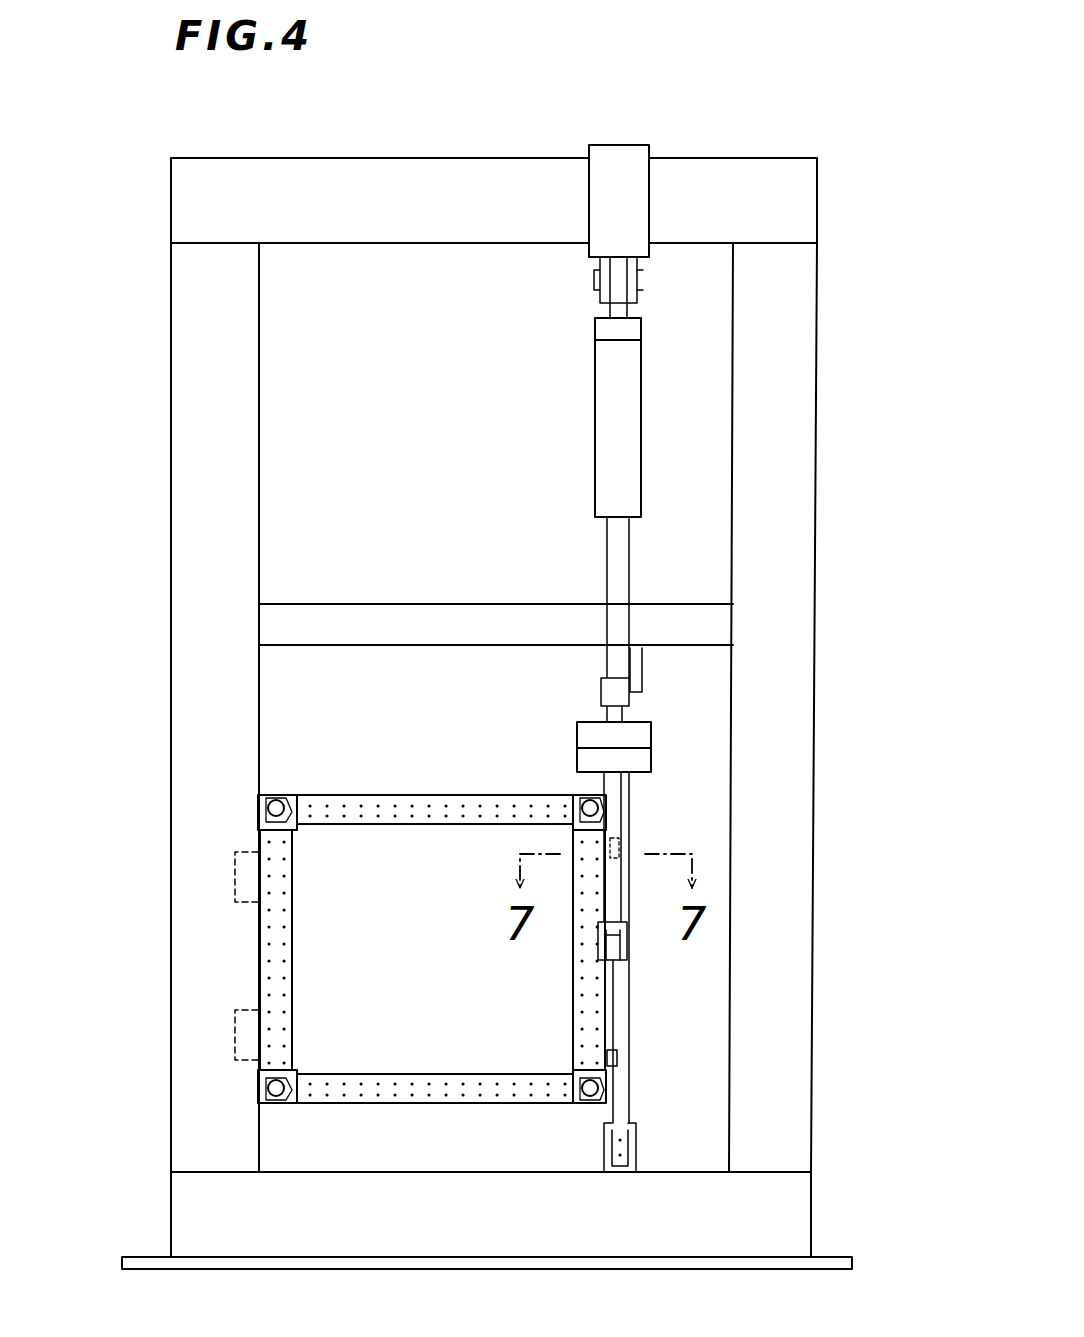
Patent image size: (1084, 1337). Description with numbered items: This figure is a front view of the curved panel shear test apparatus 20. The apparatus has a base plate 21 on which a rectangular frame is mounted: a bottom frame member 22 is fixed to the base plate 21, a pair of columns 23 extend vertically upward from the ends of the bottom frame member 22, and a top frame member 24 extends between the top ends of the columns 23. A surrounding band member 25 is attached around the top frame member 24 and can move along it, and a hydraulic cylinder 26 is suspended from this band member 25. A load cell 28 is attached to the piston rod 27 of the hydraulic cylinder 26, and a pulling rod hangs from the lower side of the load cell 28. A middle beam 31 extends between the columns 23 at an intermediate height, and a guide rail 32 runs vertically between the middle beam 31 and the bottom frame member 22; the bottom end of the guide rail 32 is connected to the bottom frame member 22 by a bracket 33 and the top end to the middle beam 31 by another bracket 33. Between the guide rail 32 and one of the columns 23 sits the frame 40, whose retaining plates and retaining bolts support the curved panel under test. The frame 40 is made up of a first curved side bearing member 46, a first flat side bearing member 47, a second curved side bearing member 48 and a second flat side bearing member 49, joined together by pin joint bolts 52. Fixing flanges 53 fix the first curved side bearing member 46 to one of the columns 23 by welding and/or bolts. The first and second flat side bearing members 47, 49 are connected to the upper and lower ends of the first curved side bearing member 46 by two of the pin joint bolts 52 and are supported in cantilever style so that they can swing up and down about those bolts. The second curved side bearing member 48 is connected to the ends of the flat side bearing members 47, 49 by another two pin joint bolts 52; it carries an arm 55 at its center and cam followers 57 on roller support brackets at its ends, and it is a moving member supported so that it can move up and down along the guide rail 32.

The curved panel shear test apparatus 20 is at (137, 170).
The base plate 21 is at (828, 1260).
The bottom frame member 22 is at (775, 1212).
The column 23 is at (188, 645).
The top frame member 24 is at (428, 200).
The surrounding band member 25 is at (625, 165).
The hydraulic cylinder 26 is at (630, 420).
The piston rod 27 is at (620, 580).
The load cell 28 is at (645, 732).
The middle beam 31 is at (425, 620).
The guide rail 32 is at (622, 1100).
The bracket 33 is at (634, 1150).
The frame 40 is at (341, 927).
The first curved side bearing member 46 is at (290, 965).
The first flat side bearing member 47 is at (422, 825).
The second curved side bearing member 48 is at (590, 965).
The second flat side bearing member 49 is at (428, 1082).
The pin joint bolt 52 is at (270, 800).
The fixing flange 53 is at (235, 887).
The arm 55 is at (615, 945).
The cam follower 57 is at (620, 848).